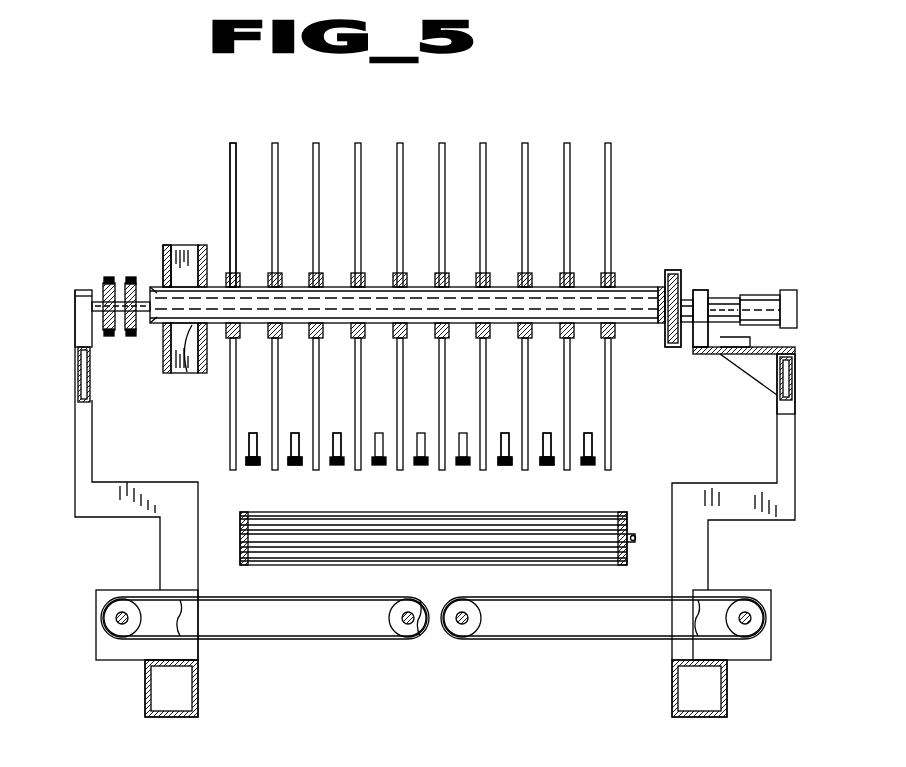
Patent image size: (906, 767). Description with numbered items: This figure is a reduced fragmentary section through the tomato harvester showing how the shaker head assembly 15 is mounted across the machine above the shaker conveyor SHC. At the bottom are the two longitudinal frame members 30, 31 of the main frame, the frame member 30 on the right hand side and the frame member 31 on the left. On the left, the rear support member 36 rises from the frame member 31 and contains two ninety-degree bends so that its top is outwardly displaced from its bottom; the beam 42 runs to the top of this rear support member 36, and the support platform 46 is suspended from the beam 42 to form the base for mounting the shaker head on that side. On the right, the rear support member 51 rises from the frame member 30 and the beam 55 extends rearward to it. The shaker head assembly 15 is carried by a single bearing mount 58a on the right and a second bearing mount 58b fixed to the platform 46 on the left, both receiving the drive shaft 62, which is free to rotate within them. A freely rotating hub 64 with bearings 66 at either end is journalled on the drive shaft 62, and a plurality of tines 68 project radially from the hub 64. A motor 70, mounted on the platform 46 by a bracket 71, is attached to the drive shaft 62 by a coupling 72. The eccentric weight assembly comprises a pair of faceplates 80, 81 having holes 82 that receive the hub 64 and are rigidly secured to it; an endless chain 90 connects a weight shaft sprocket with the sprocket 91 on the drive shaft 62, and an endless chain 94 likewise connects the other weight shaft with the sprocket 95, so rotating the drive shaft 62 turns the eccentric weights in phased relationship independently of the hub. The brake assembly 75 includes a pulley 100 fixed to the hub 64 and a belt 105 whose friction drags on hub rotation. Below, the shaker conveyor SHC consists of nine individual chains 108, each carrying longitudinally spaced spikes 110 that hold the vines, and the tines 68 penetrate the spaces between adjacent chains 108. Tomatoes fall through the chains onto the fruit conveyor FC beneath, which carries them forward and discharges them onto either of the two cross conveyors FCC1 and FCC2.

The shaker head assembly 15 is at (228, 155).
The tines 68 is at (358, 143).
The hub 64 is at (636, 287).
The faceplate 80 is at (205, 248).
The faceplate 81 is at (165, 250).
The holes 82 is at (165, 280).
The sprocket 91 is at (106, 280).
The sprocket 95 is at (128, 280).
The drive shaft 62 is at (100, 290).
The bearing mount 58a is at (80, 305).
The endless chain 90 is at (106, 333).
The beam 55 is at (78, 376).
The endless chain 94 is at (130, 336).
The bearings 66 is at (148, 315).
The brake assembly 75 is at (678, 268).
The pulley 100 is at (662, 325).
The belt 105 is at (674, 347).
The second bearing mount 58b is at (705, 292).
The coupling 72 is at (725, 300).
The motor 70 is at (797, 318).
The bracket 71 is at (760, 343).
The support platform 46 is at (728, 354).
The beam 42 is at (780, 398).
The spikes 110 is at (251, 433).
The shaker conveyor SHC is at (246, 446).
The chains 108 is at (258, 465).
The fruit conveyor FC is at (612, 512).
The rear support member 51 is at (142, 518).
The rear support member 36 is at (742, 522).
The longitudinal frame member 30 is at (145, 690).
The longitudinal frame member 31 is at (727, 688).
The cross conveyor FCC2 is at (350, 648).
The cross conveyor FCC1 is at (595, 648).